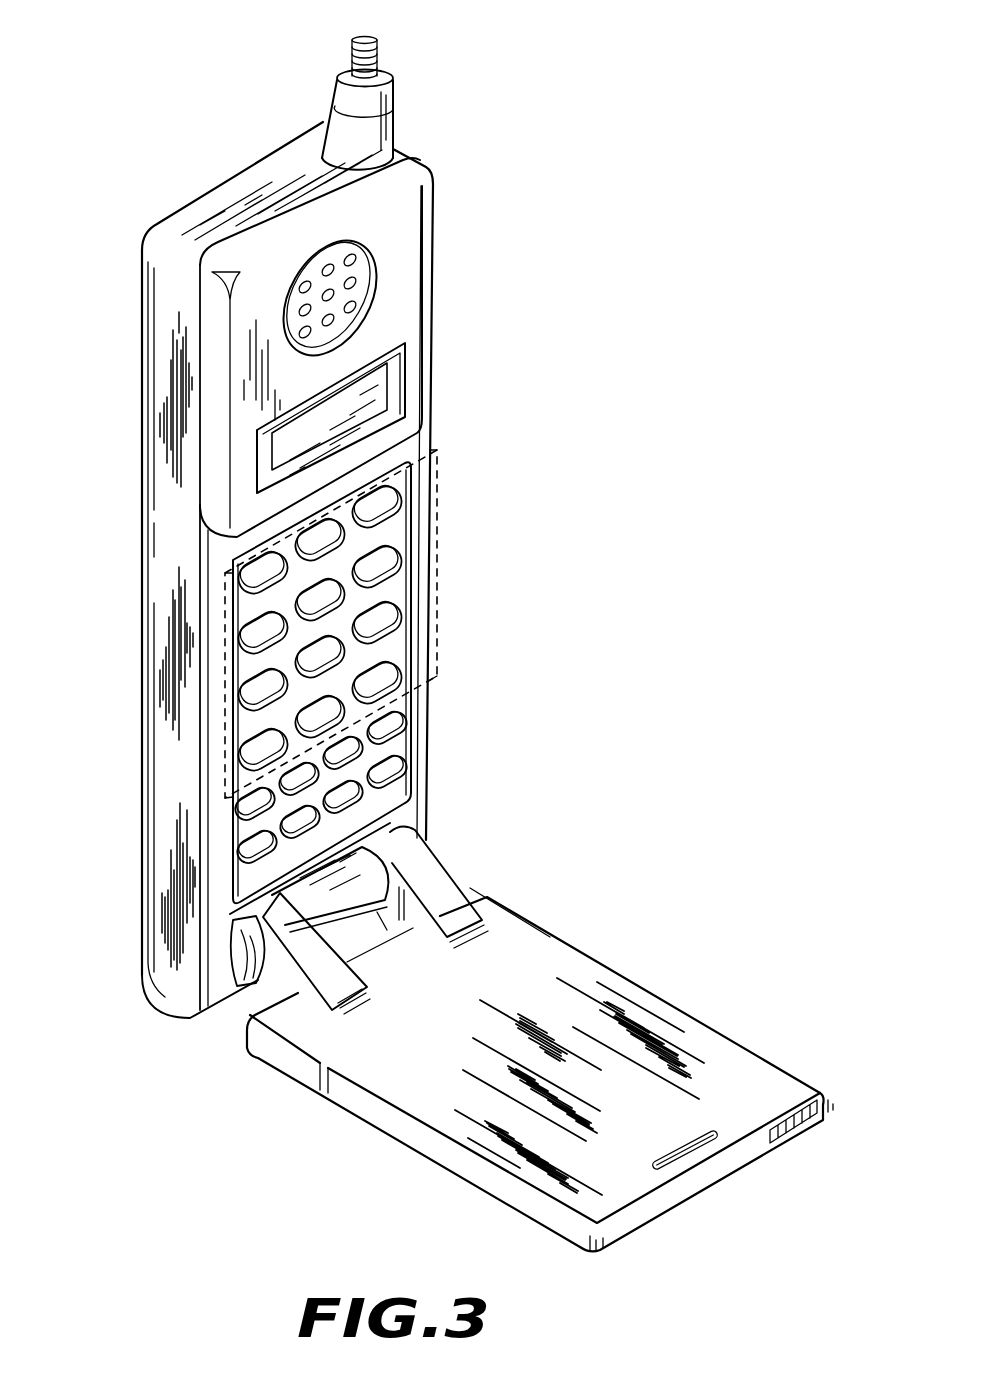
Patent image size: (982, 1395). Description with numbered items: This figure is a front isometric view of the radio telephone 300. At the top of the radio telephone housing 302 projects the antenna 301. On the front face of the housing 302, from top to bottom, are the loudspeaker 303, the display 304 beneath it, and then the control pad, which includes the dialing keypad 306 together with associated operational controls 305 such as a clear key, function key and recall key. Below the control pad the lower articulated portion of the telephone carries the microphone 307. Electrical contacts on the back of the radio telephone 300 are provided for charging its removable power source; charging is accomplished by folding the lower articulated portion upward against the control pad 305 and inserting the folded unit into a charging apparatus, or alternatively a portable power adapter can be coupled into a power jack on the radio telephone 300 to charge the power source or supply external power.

The radio telephone 300 is at (611, 611).
The antenna 301 is at (383, 60).
The radio telephone housing 302 is at (142, 289).
The loudspeaker 303 is at (353, 310).
The display 304 is at (372, 403).
The operational controls 305 is at (397, 738).
The dialing keypad 306 is at (437, 555).
The microphone 307 is at (713, 1130).